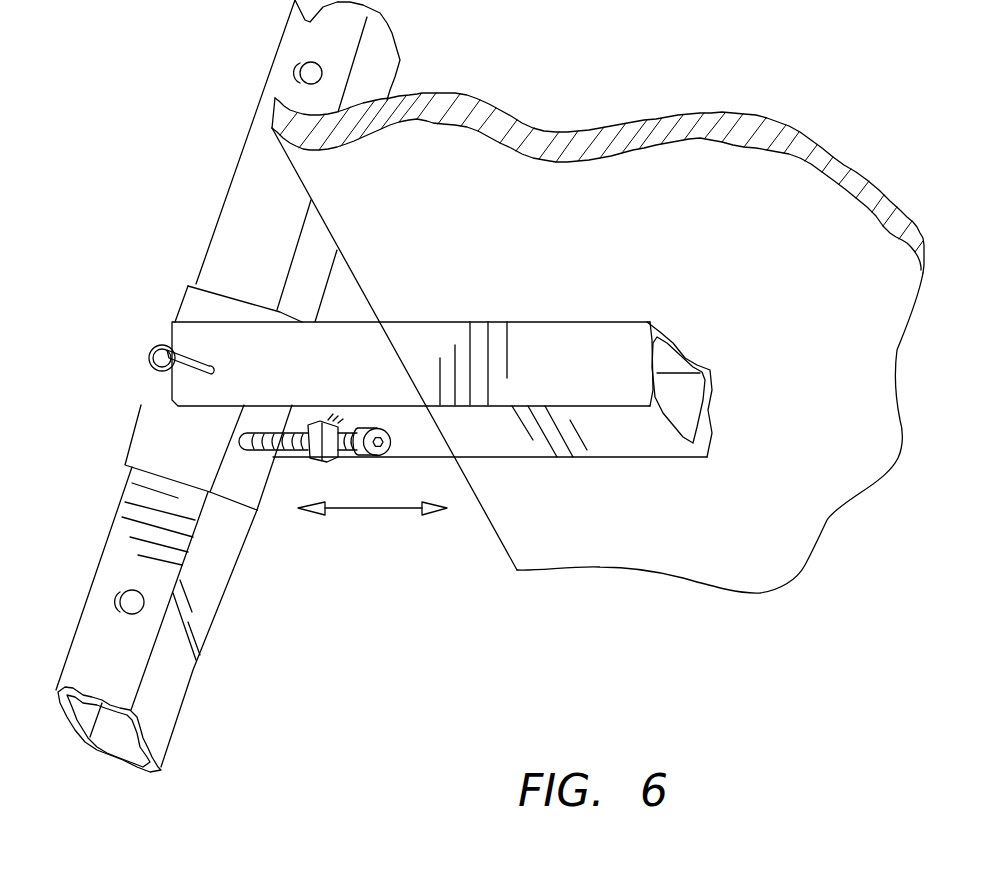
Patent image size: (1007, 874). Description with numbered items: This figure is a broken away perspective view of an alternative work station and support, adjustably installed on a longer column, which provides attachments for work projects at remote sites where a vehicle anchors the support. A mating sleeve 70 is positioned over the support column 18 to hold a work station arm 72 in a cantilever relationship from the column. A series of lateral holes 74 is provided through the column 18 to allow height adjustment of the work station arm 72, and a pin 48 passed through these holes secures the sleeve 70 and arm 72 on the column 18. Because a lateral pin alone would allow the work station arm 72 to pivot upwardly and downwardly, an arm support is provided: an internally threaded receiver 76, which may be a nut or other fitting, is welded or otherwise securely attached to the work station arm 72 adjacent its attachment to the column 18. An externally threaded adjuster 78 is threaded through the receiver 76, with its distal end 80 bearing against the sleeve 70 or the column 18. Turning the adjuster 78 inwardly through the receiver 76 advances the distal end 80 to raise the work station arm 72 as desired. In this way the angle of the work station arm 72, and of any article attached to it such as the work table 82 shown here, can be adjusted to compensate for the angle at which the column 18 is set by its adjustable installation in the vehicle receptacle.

The support column 18 is at (226, 197).
The pin 48 is at (213, 365).
The mating sleeve 70 is at (135, 431).
The work station arm 72 is at (556, 322).
The lateral holes 74 is at (297, 68).
The internally threaded receiver 76 is at (331, 462).
The externally threaded adjuster 78 is at (387, 443).
The distal end 80 is at (245, 452).
The work table 82 is at (598, 128).